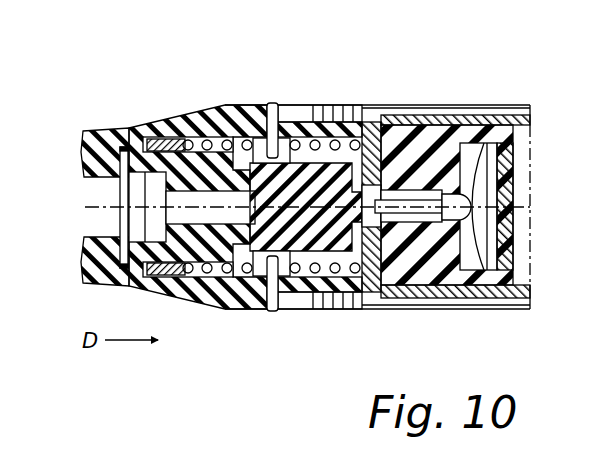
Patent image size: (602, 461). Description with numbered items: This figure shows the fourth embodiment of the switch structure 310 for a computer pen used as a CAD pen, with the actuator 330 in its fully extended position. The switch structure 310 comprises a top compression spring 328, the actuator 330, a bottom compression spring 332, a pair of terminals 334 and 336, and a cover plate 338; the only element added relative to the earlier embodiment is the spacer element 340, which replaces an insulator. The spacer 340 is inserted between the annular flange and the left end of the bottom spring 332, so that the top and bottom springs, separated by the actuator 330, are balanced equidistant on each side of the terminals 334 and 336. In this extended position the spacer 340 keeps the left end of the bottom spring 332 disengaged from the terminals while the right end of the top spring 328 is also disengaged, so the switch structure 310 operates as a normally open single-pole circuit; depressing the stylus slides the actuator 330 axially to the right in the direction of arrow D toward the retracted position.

The switch structure 310 is at (571, 79).
The top compression spring 328 is at (204, 139).
The actuator 330 is at (305, 250).
The bottom compression spring 332 is at (317, 273).
The terminal 334 is at (271, 102).
The terminal 336 is at (271, 313).
The cover plate 338 is at (372, 123).
The spacer element 340 is at (152, 138).